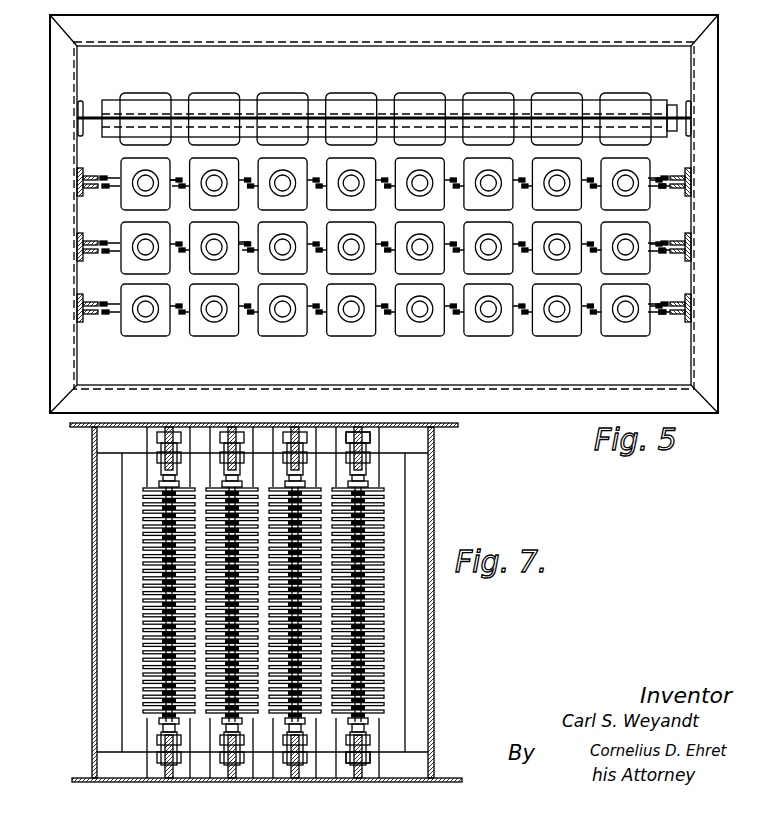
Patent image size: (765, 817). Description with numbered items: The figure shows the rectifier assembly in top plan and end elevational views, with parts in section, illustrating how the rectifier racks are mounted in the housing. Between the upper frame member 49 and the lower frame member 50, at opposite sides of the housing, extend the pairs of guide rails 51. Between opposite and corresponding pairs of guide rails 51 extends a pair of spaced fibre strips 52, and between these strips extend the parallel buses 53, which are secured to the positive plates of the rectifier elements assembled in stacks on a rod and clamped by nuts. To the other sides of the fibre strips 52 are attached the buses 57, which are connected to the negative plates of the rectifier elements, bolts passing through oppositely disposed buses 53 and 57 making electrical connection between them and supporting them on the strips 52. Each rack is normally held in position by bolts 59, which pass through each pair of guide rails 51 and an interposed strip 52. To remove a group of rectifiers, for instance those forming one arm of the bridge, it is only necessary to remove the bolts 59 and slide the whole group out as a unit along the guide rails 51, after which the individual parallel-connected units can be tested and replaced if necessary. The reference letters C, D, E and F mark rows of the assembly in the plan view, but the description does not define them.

In FIG. 5, the upper frame member 49 is at (712, 378).
In FIG. 7, the upper frame member 49 is at (85, 428).
In FIG. 7, the lower frame member 50 is at (85, 777).
In FIG. 5, the guide rails 51 is at (80, 113).
In FIG. 5, the fibre strips 52 is at (614, 120).
In FIG. 7, the fibre strips 52 is at (368, 430).
In FIG. 5, the buses 53 is at (183, 180).
In FIG. 5, the buses 57 is at (180, 194).
In FIG. 7, the bolts 59 is at (366, 440).
In FIG. 5, the contact rod C is at (655, 112).
In FIG. 5, the first row of units D is at (636, 178).
In FIG. 5, the second row of units E is at (638, 236).
In FIG. 5, the third row of units F is at (648, 298).